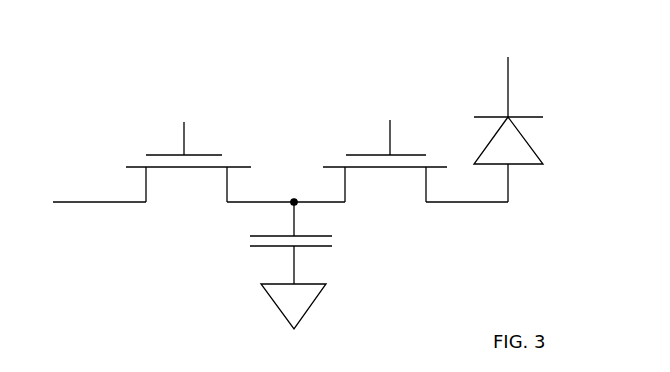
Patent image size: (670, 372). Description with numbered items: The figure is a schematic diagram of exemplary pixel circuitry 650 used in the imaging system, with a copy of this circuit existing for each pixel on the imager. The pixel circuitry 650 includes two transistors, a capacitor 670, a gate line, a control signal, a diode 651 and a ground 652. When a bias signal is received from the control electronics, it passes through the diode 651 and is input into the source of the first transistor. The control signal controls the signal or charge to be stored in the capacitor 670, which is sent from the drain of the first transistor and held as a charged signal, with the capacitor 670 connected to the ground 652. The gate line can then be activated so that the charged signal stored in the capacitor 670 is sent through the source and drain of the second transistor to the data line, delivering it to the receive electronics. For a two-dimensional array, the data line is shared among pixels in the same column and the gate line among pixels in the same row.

The pixel circuitry 650 is at (155, 47).
The diode 651 is at (510, 146).
The capacitor 670 is at (308, 242).
The ground 652 is at (295, 302).